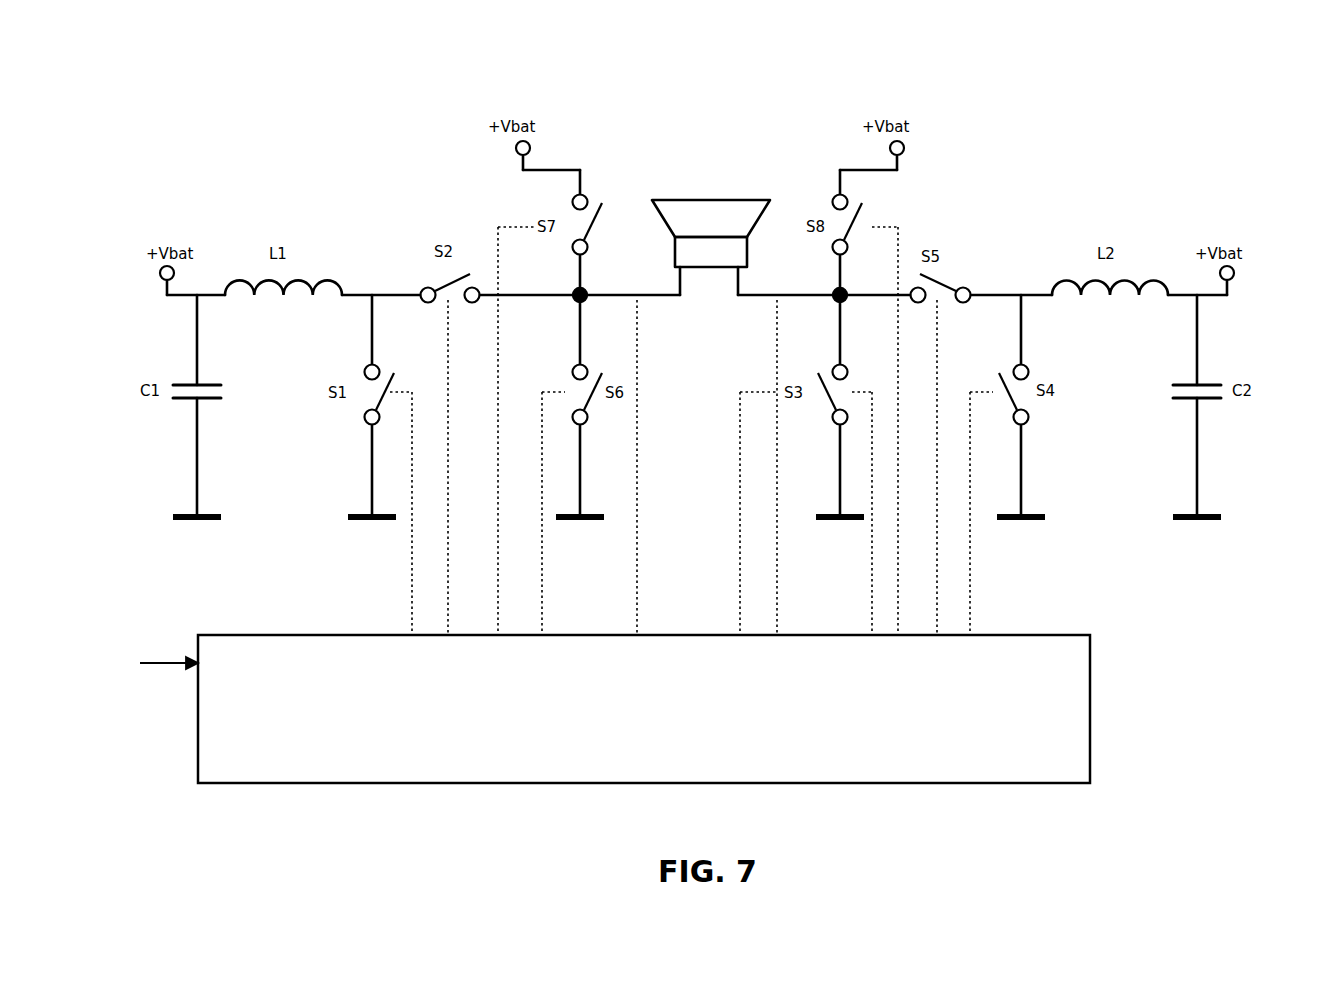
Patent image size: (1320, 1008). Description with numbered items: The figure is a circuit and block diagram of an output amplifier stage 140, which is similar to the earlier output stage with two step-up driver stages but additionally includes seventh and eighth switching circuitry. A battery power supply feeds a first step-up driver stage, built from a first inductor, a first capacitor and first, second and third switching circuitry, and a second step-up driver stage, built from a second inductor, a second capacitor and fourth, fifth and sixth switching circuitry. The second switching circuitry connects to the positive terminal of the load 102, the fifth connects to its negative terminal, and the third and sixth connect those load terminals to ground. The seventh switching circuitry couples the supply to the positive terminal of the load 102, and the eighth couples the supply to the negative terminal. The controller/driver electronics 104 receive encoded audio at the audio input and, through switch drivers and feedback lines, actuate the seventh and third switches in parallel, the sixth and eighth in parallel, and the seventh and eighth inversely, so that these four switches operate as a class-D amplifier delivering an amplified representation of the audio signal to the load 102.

The output amplifier stage 140 is at (218, 140).
The load 102 is at (703, 205).
The controller/driver electronics 104 is at (1085, 718).